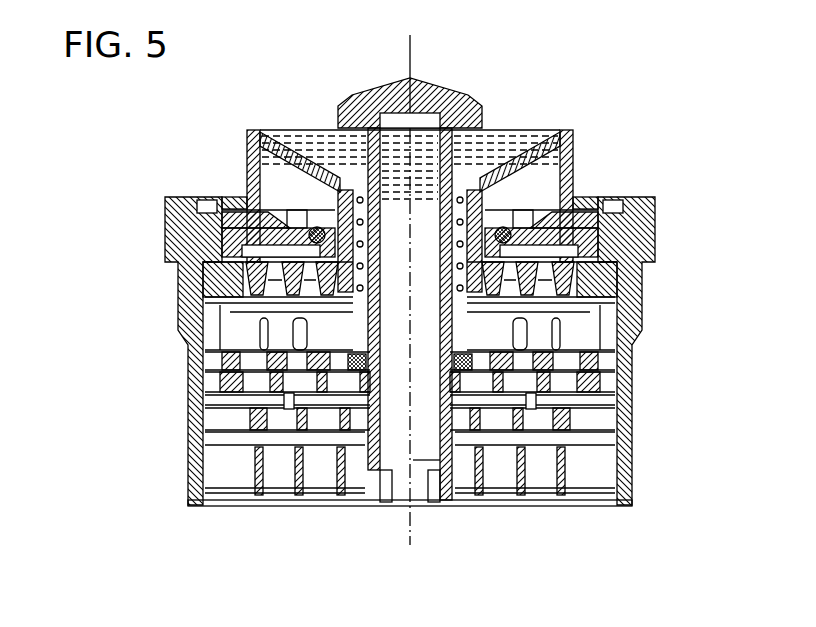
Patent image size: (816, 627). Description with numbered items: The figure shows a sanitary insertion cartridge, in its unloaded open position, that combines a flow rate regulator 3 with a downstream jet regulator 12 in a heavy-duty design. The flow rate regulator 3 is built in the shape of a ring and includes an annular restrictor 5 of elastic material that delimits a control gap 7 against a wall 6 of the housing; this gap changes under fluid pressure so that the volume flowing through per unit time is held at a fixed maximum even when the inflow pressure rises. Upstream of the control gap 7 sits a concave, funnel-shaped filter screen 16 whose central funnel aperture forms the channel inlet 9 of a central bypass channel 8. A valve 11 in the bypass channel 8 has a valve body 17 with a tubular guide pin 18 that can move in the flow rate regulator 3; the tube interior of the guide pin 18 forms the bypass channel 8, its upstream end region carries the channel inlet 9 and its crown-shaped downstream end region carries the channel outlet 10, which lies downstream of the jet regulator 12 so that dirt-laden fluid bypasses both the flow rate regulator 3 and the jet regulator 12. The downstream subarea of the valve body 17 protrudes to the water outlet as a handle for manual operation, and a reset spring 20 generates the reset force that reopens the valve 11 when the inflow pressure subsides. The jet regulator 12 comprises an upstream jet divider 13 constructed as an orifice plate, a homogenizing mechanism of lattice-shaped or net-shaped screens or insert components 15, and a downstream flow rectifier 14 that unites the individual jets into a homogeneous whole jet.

The flow rate regulator 3 is at (580, 95).
The annular restrictor 5 is at (508, 210).
The wall of the housing 6 is at (542, 223).
The control gap 7 is at (525, 250).
The bypass channel 8 is at (406, 330).
The channel inlet 9 is at (383, 150).
The channel outlet 10 is at (414, 460).
The valve 11 is at (456, 63).
The jet regulator 12 is at (645, 330).
The jet divider 13 is at (330, 283).
The flow rectifier 14 is at (580, 470).
The screens or insert components 15 is at (585, 418).
The filter screen 16 is at (515, 128).
The valve body 17 is at (378, 240).
The guide pin 18 is at (377, 382).
The reset spring 20 is at (355, 300).